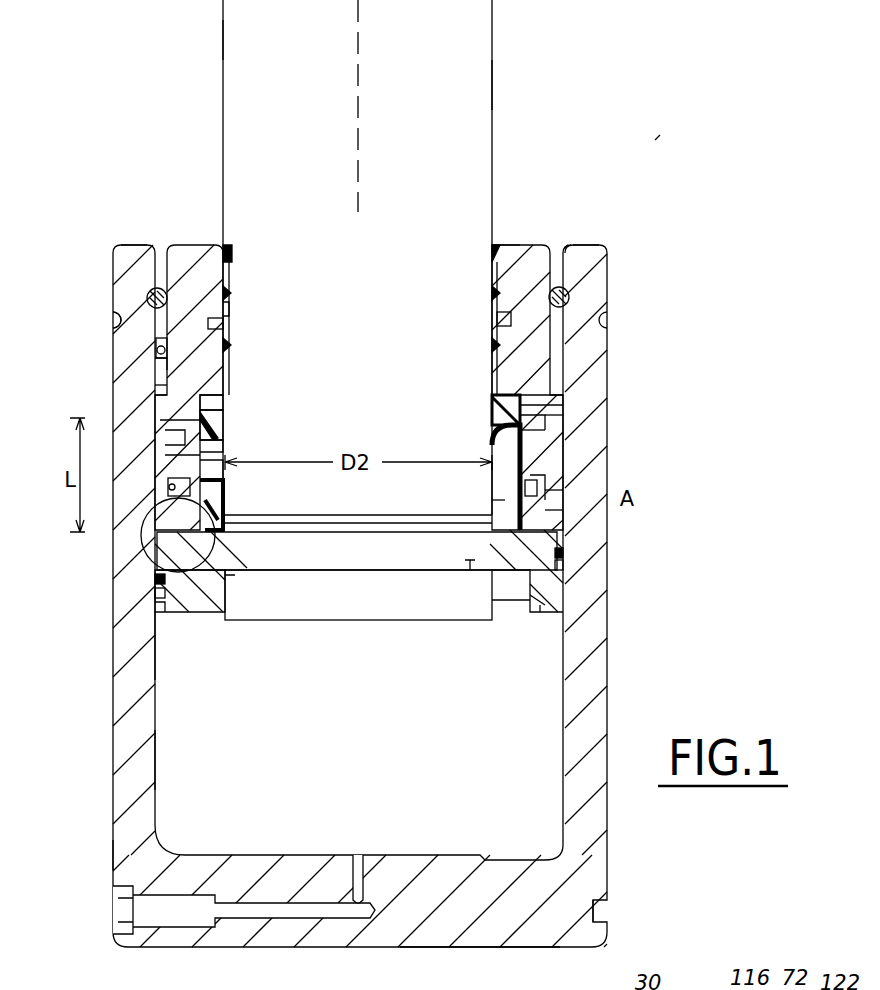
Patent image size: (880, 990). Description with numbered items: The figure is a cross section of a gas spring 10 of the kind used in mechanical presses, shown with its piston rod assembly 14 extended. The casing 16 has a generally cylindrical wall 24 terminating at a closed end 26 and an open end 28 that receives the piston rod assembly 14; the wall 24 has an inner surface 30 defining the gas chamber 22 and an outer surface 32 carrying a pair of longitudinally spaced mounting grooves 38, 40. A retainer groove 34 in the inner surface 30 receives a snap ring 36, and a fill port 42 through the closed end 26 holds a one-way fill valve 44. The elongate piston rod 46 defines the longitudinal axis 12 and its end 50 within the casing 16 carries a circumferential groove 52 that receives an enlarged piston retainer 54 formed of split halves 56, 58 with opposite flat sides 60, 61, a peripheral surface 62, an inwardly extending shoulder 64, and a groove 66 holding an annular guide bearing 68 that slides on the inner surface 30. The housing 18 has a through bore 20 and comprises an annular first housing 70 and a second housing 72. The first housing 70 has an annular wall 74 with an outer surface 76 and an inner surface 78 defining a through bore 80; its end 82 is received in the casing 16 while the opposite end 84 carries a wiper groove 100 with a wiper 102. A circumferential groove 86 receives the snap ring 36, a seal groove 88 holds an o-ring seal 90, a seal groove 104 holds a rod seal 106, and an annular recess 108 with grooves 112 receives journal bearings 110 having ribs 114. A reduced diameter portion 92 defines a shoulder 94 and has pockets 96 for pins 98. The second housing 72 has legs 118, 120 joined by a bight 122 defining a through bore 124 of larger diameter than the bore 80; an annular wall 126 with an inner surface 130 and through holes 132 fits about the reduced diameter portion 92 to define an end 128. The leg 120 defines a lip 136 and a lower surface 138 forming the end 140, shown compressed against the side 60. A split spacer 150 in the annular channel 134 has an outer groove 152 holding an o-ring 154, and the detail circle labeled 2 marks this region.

The gas spring 10 is at (658, 132).
The longitudinal axis 12 is at (358, 75).
The piston rod assembly 14 is at (506, 82).
The casing 16 is at (610, 661).
The housing 18 is at (535, 238).
The through bore 20 is at (228, 265).
The gas chamber 22 is at (317, 777).
The cylindrical wall 24 is at (150, 648).
The closed end 26 is at (486, 947).
The open end 28 is at (595, 242).
The inner surface 30 is at (160, 745).
The outer surface 32 is at (118, 852).
The retainer groove 34 is at (130, 285).
The snap ring 36 is at (160, 243).
The circumferential groove 38 is at (600, 900).
The circumferential groove 40 is at (118, 322).
The fill port 42 is at (290, 905).
The fill valve 44 is at (120, 908).
The piston rod 46 is at (200, 40).
The end 50 is at (365, 622).
The circumferential groove 52 is at (468, 570).
The piston retainer 54 is at (512, 605).
The split half 56 is at (480, 618).
The split half 58 is at (195, 615).
The side 60 is at (500, 504).
The side 61 is at (542, 615).
The peripheral surface 62 is at (160, 610).
The shoulder 64 is at (250, 558).
The groove 66 is at (160, 595).
The guide bearing 68 is at (160, 578).
The first housing 70 is at (560, 398).
The second housing 72 is at (560, 465).
The annular wall 74 is at (160, 388).
The outer surface 76 is at (155, 402).
The inner surface 78 is at (230, 385).
The through bore 80 is at (497, 288).
The end 82 is at (226, 447).
The end 84 is at (190, 242).
The circumferential groove 86 is at (572, 293).
The seal groove 88 is at (160, 370).
The seal 90 is at (155, 352).
The reduced diameter portion 92 is at (560, 435).
The annular shoulder 94 is at (560, 425).
The pocket 96 is at (165, 440).
The pin 98 is at (165, 460).
The wiper groove 100 is at (497, 257).
The wiper 102 is at (500, 240).
The seal groove 104 is at (230, 398).
The rod seal 106 is at (225, 422).
The annular recess 108 is at (230, 310).
The journal bearing 110 is at (232, 323).
The circumferential groove 112 is at (230, 292).
The rib 114 is at (498, 330).
The leg 118 is at (560, 478).
The leg 120 is at (565, 492).
The bight 122 is at (228, 492).
The through bore 124 is at (228, 470).
The annular wall 126 is at (560, 445).
The end 128 is at (560, 412).
The inner surface 130 is at (500, 420).
The through hole 132 is at (160, 422).
The annular channel 134 is at (165, 492).
The lip 136 is at (565, 514).
The lower surface 138 is at (532, 608).
The end 140 is at (228, 574).
The split spacer 150 is at (500, 486).
The outer circumferential groove 152 is at (560, 486).
The o-ring 154 is at (145, 538).
The detail view indicator 2 is at (140, 572).